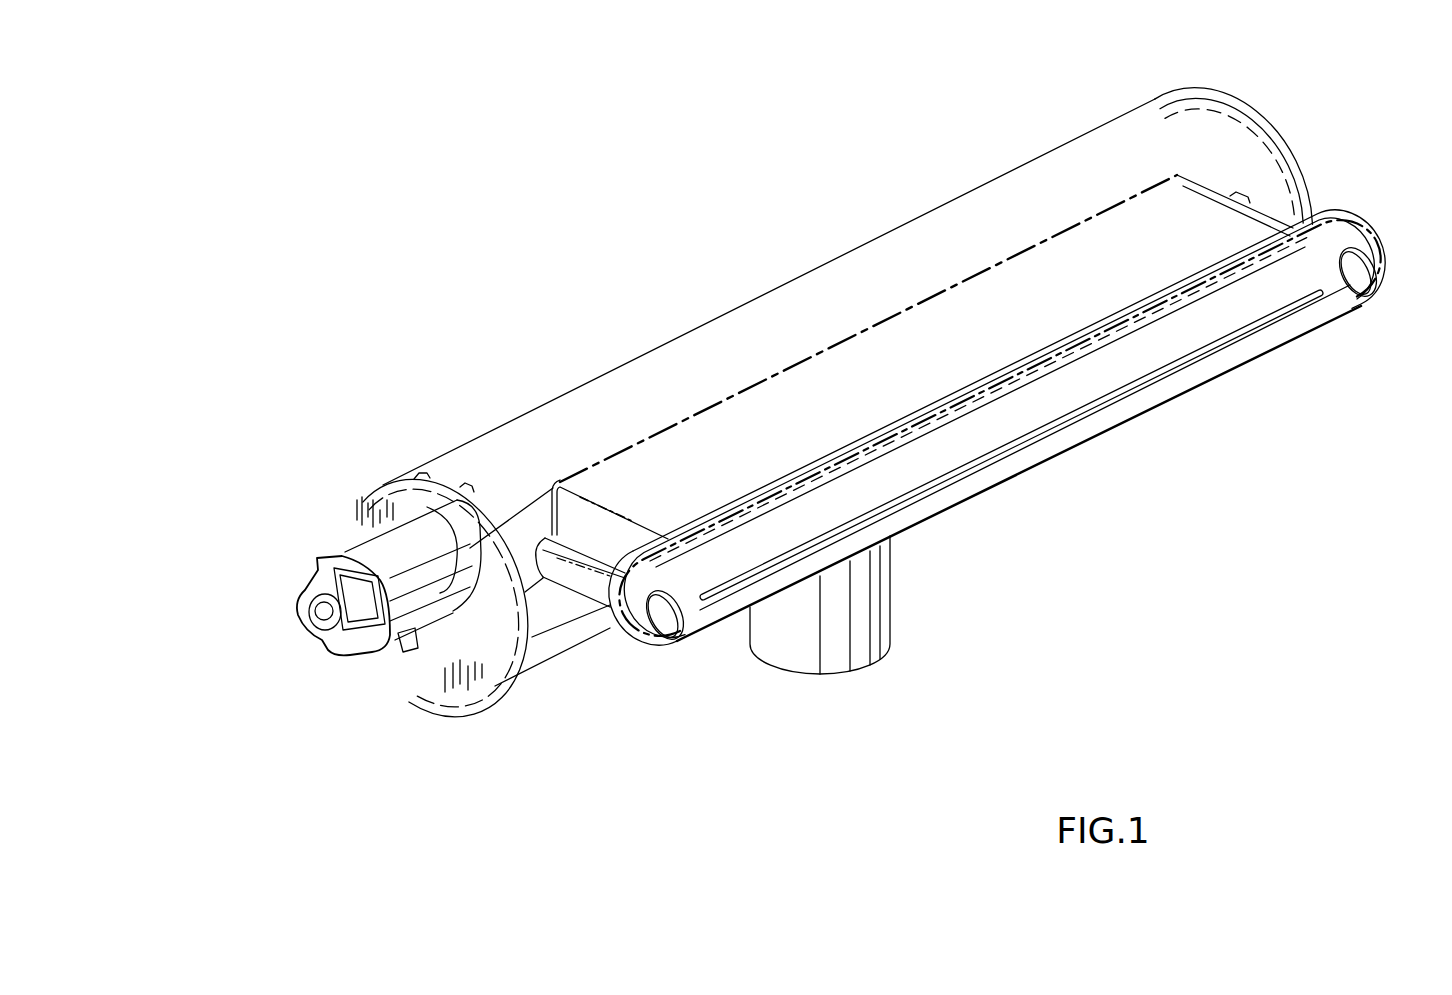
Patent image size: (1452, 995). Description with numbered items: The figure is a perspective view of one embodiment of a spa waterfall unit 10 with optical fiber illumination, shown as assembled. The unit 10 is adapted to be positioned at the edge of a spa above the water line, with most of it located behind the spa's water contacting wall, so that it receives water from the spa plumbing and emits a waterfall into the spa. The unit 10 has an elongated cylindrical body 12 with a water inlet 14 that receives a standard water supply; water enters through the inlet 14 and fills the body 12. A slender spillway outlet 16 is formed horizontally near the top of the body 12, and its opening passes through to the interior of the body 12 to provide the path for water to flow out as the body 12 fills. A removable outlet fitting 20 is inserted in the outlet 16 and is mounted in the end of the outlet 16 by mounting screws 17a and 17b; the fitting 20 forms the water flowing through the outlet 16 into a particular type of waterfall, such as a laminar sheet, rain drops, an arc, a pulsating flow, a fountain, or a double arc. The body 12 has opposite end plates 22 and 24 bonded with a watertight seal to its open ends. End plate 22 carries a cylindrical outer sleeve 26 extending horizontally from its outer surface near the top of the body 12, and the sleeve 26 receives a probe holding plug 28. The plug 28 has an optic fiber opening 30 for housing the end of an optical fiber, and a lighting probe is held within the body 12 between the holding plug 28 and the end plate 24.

The spa waterfall unit 10 is at (478, 230).
The elongated cylindrical body 12 is at (822, 264).
The water inlet 14 is at (895, 580).
The spillway outlet 16 is at (1083, 270).
The mounting screw 17a is at (667, 615).
The mounting screw 17b is at (1358, 272).
The removable outlet fitting 20 is at (651, 666).
The end plate 22 is at (345, 503).
The end plate 24 is at (1282, 157).
The cylindrical outer sleeve 26 is at (343, 556).
The probe holding plug 28 is at (340, 663).
The optic fiber opening 30 is at (325, 620).